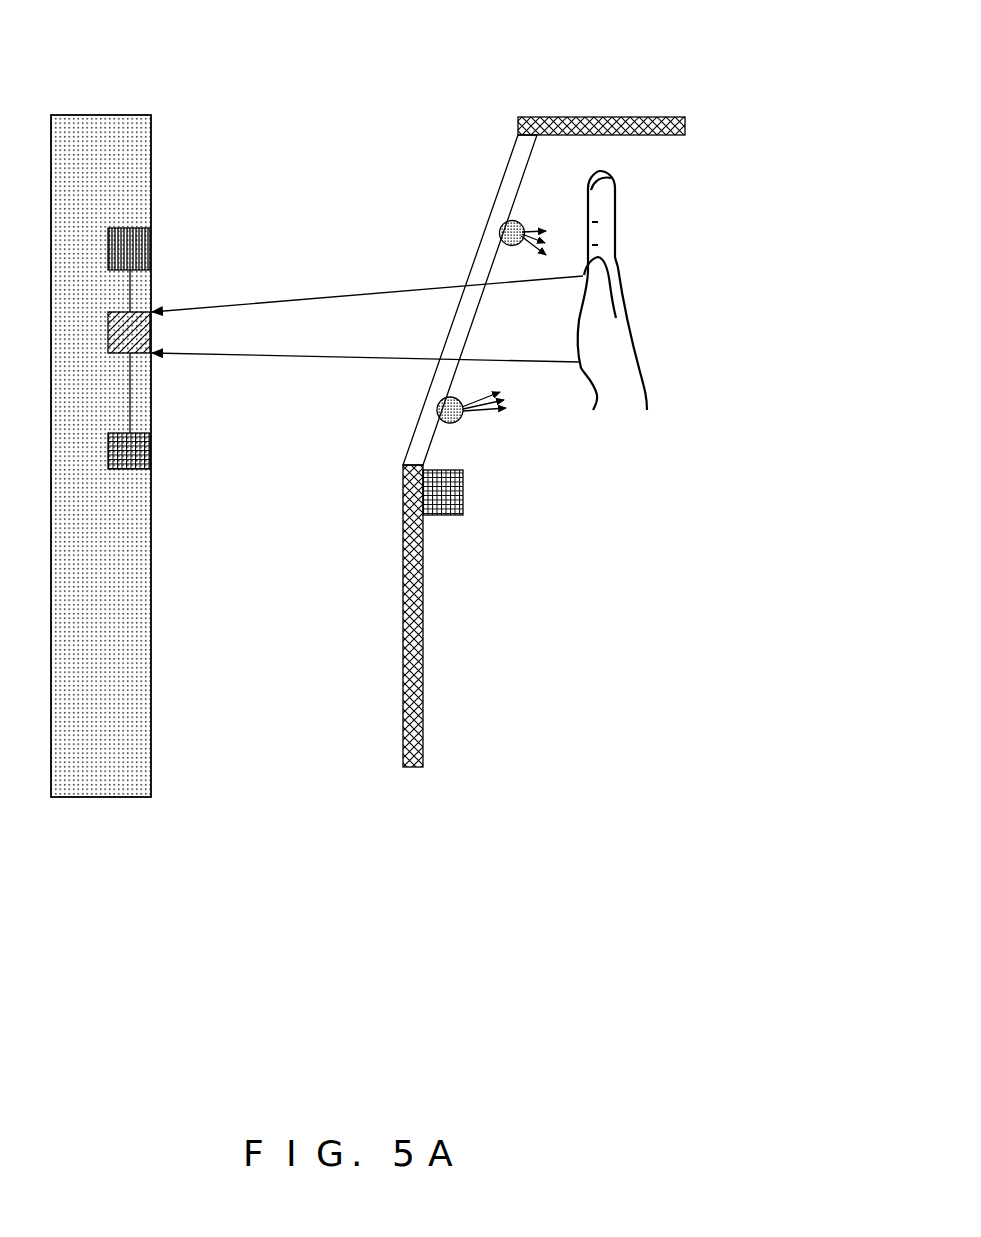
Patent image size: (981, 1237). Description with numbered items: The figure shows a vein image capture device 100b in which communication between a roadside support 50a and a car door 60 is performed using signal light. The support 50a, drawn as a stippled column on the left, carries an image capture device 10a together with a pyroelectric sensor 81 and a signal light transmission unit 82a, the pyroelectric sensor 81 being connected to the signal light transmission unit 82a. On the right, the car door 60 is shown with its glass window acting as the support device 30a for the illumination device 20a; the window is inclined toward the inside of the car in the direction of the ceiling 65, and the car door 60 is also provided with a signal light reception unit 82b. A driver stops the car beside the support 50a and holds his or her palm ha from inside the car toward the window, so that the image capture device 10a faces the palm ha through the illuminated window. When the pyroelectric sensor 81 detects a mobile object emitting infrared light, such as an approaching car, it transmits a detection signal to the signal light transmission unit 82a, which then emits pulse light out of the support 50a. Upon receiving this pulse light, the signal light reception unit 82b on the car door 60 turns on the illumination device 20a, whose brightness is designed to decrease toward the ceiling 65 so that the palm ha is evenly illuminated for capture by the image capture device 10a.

The vein image capture device 100b is at (403, 28).
The support 50a is at (152, 590).
The pyroelectric sensor 81 is at (152, 230).
The image capture device 10a is at (152, 297).
The signal light transmission unit 82a is at (152, 433).
The ceiling 65 is at (605, 118).
The support device 30a is at (425, 445).
The illumination device 20a is at (453, 423).
The car door 60 is at (423, 627).
The signal light reception unit 82b is at (457, 517).
The palm ha is at (618, 285).